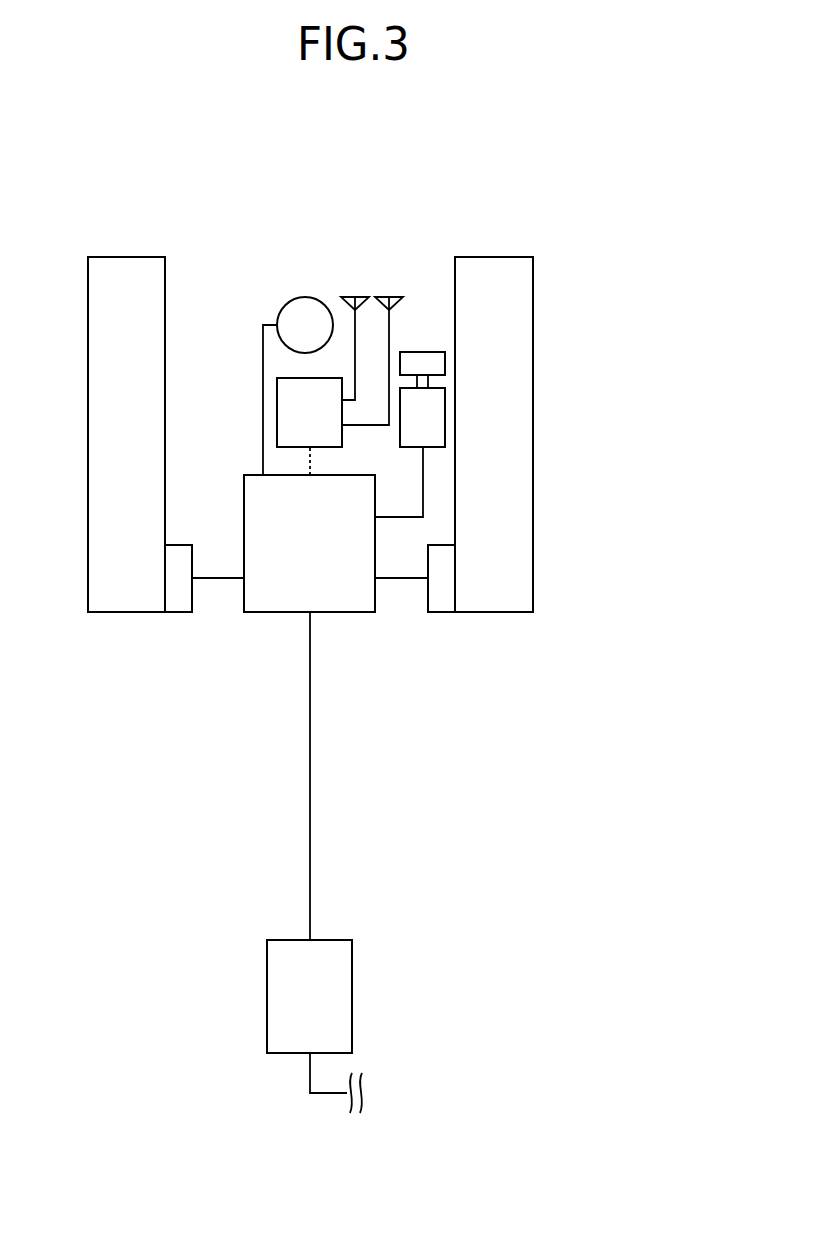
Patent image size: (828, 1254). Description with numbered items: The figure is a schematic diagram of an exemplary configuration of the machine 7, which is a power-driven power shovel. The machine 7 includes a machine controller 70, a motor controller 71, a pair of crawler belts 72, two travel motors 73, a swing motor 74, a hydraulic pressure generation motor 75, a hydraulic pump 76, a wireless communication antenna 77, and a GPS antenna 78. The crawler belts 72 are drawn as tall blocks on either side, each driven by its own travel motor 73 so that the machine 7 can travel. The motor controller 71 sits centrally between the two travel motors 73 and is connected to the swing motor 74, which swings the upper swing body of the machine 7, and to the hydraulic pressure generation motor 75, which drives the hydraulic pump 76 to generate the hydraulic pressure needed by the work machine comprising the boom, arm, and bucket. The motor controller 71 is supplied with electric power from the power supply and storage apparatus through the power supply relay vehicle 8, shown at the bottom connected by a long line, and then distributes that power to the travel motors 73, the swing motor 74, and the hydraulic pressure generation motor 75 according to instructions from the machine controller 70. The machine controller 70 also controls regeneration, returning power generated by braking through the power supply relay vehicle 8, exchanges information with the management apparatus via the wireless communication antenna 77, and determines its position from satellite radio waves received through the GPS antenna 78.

The machine 7 is at (602, 157).
The power supply relay vehicle 8 is at (352, 998).
The machine controller 70 is at (343, 448).
The motor controller 71 is at (346, 614).
The crawler belts 72 is at (124, 257).
The travel motors 73 is at (178, 614).
The swing motor 74 is at (305, 297).
The hydraulic pressure generation motor 75 is at (413, 449).
The hydraulic pump 76 is at (420, 352).
The wireless communication antenna 77 is at (355, 297).
The GPS antenna 78 is at (389, 297).